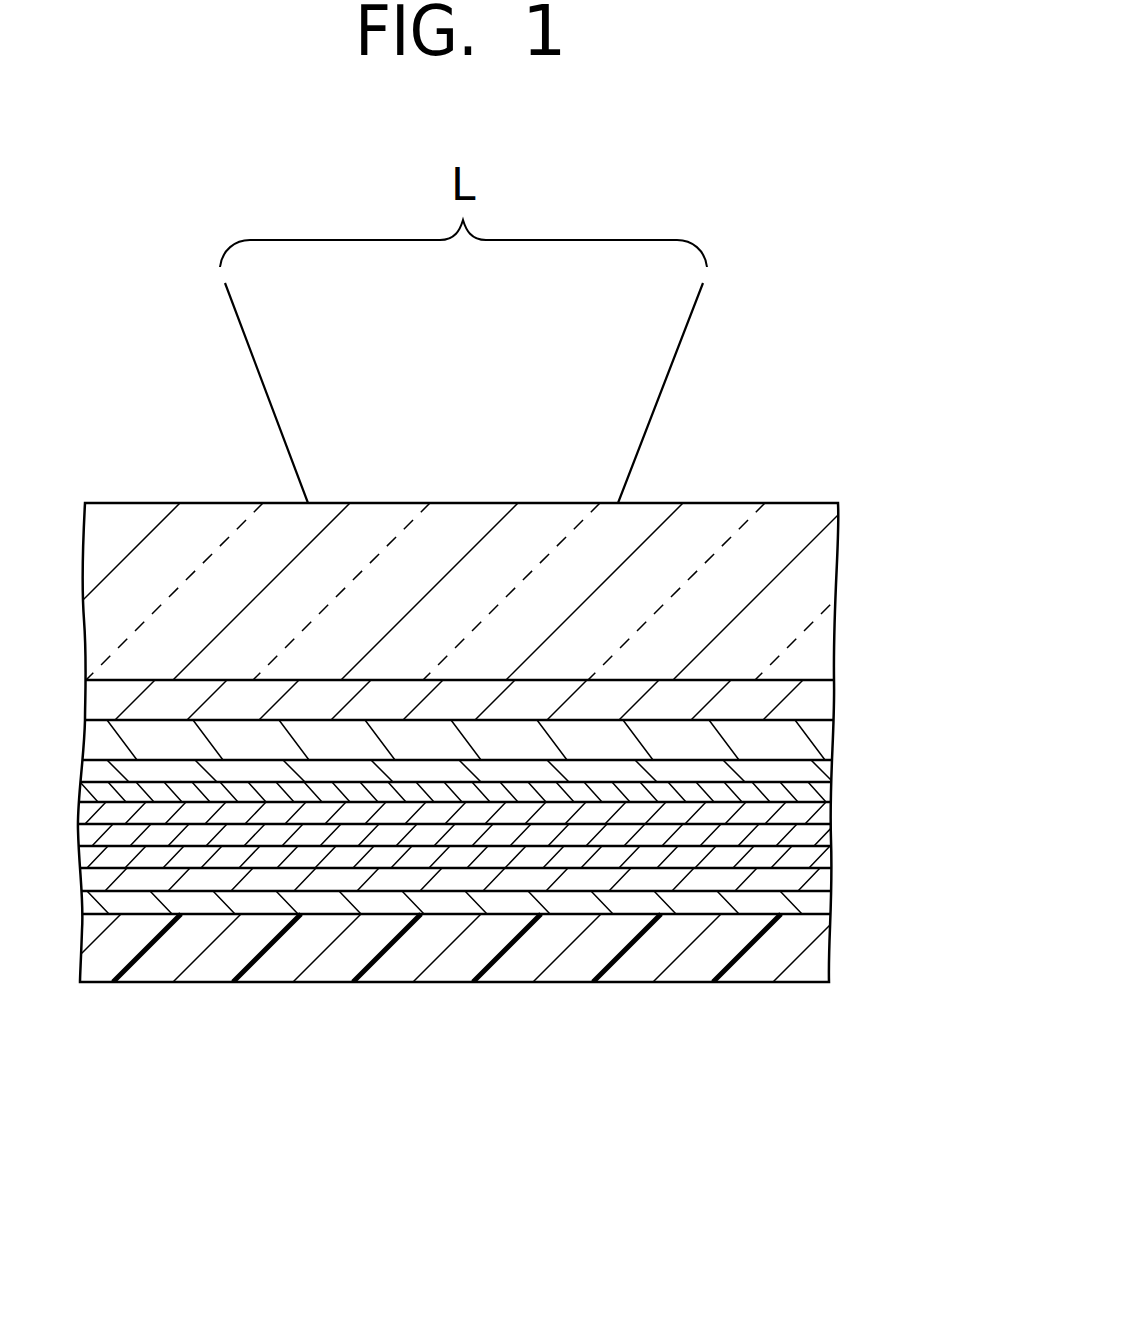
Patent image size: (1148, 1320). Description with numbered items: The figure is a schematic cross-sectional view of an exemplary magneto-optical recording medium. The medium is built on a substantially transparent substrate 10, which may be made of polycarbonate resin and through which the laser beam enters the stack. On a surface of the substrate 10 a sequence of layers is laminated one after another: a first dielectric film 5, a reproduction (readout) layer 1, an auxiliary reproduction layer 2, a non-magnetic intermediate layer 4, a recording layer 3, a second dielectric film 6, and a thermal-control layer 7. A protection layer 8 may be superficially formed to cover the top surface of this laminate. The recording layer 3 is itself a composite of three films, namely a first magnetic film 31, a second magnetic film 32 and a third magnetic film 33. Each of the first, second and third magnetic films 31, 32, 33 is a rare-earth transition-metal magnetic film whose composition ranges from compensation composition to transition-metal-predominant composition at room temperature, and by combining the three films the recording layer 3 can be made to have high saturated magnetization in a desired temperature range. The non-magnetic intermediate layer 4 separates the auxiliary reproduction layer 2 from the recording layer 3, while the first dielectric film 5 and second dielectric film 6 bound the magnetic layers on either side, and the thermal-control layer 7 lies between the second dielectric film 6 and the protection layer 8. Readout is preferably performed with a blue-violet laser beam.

The substrate 10 is at (803, 573).
The first dielectric film 5 is at (808, 692).
The reproduction layer 1 is at (818, 725).
The auxiliary reproduction layer 2 is at (818, 758).
The non-magnetic intermediate layer 4 is at (808, 777).
The recording layer 3 is at (460, 987).
The first magnetic film 31 is at (700, 818).
The second magnetic film 32 is at (590, 833).
The third magnetic film 33 is at (727, 1073).
The second dielectric film 6 is at (820, 858).
The thermal-control layer 7 is at (817, 880).
The protection layer 8 is at (808, 927).